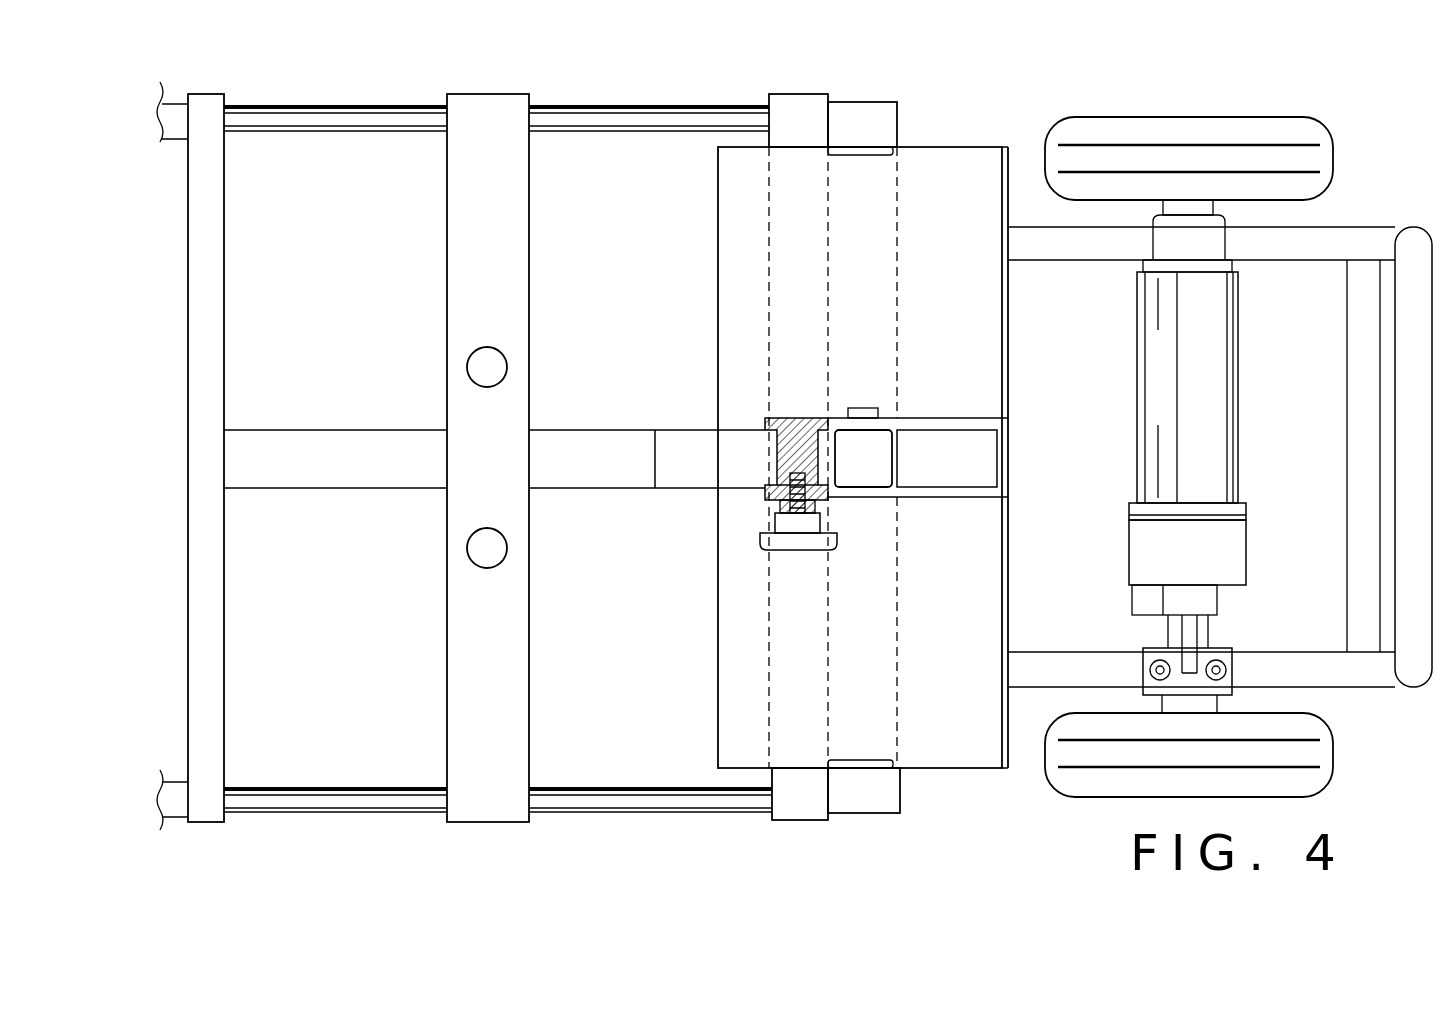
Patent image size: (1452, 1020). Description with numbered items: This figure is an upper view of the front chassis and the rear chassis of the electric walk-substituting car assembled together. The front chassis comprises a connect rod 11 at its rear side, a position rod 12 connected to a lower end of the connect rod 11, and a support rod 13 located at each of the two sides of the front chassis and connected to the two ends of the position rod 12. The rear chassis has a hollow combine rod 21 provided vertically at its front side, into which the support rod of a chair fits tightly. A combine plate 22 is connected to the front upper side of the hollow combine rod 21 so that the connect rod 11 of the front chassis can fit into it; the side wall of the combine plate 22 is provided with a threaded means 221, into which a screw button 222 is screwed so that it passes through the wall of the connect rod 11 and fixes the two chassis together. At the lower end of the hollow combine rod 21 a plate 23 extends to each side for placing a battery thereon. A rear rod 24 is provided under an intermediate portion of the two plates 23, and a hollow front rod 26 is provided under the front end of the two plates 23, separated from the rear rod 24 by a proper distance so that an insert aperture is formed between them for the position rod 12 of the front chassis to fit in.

The connect rod 11 is at (768, 453).
The position rod 12 is at (800, 810).
The support rod 13 is at (622, 798).
The hollow combine rod 21 is at (897, 457).
The combine plate 22 is at (800, 418).
The threaded means 221 is at (830, 505).
The screw button 222 is at (787, 543).
The plate 23 is at (928, 168).
The rear rod 24 is at (870, 795).
The hollow front rod 26 is at (727, 715).